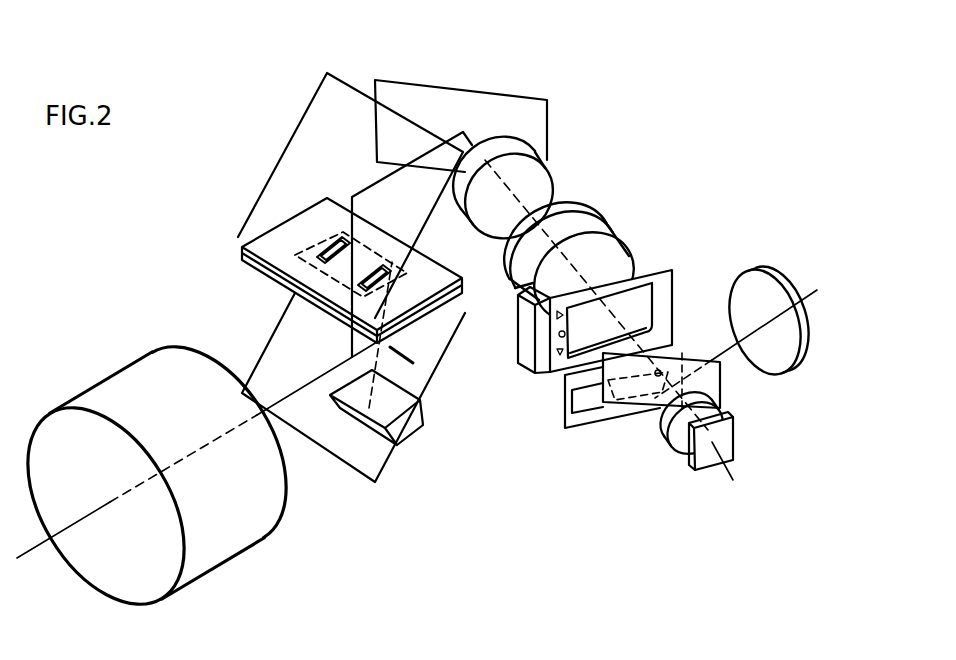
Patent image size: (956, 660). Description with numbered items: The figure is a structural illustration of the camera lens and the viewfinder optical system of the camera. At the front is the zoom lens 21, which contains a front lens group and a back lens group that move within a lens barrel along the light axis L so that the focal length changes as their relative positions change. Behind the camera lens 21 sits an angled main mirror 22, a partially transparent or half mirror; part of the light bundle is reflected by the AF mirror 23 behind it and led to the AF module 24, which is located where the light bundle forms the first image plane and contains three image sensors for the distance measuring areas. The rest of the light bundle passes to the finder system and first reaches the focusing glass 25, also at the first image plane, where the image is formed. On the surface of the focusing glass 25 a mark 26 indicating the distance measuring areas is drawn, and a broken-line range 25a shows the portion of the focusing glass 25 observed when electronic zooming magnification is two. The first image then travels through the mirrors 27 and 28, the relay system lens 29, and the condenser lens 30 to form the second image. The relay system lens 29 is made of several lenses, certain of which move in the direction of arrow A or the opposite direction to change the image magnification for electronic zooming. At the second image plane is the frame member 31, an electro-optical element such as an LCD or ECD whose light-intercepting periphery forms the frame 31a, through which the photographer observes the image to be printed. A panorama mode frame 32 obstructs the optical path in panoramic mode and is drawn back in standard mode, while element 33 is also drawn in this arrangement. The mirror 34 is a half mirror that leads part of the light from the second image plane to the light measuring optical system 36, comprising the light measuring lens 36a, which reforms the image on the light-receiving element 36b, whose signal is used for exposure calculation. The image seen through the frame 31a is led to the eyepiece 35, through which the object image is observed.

The zoom lens 21 is at (218, 568).
The light axis L is at (45, 545).
The main mirror 22 is at (312, 445).
The AF mirror 23 is at (396, 358).
The AF module 24 is at (412, 448).
The focusing glass 25 is at (242, 256).
The range 25a is at (296, 253).
The mark 26 is at (383, 262).
The mirror 27 is at (305, 108).
The mirror 28 is at (473, 87).
The relay system lens 29 is at (640, 264).
The condenser lens 30 is at (650, 263).
The frame member 31 is at (672, 268).
The frame 31a is at (650, 310).
The panorama mode frame 32 is at (643, 358).
The frame plate 33 is at (570, 452).
The mirror 34 is at (722, 383).
The eyepiece 35 is at (779, 272).
The light measuring optical system 36 is at (688, 496).
The light measuring lens 36a is at (730, 412).
The light-receiving element 36b is at (740, 448).
The arrow A is at (596, 295).